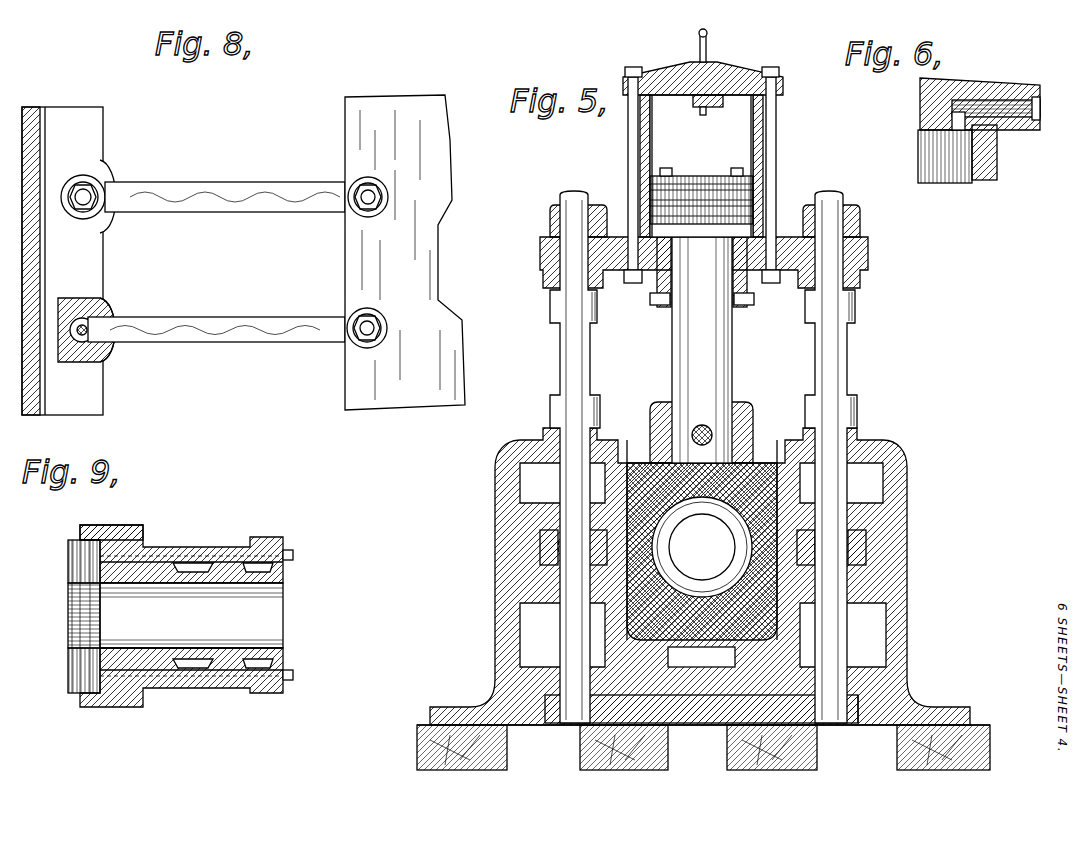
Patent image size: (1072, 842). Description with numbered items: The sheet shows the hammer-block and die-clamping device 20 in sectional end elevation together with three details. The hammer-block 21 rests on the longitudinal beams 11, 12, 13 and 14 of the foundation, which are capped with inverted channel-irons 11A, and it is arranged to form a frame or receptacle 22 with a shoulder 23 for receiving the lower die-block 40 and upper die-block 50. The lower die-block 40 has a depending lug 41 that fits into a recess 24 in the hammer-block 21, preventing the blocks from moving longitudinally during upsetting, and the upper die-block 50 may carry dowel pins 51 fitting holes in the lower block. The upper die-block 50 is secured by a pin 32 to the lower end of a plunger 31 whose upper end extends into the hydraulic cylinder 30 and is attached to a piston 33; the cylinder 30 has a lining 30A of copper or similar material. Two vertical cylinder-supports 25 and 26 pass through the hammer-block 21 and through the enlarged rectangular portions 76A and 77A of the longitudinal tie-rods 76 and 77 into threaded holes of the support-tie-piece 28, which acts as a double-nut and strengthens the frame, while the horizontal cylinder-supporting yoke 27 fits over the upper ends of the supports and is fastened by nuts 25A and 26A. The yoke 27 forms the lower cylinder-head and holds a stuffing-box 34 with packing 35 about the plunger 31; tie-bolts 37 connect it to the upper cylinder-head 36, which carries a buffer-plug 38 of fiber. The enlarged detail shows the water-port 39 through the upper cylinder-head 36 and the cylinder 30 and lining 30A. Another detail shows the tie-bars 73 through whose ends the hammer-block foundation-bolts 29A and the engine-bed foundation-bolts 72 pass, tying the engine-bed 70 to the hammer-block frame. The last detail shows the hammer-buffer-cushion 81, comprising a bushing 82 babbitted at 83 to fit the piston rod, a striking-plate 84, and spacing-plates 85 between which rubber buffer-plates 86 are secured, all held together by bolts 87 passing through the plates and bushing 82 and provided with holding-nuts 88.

In FIG. 5, the longitudinal beam 11 is at (420, 760).
In FIG. 5, the inverted channel-iron cap 11A is at (425, 724).
In FIG. 5, the longitudinal beam 12 is at (578, 760).
In FIG. 5, the longitudinal beam 13 is at (735, 765).
In FIG. 5, the longitudinal beam 14 is at (900, 762).
In FIG. 5, the hammer-block and die-clamping device 20 is at (905, 372).
In FIG. 8, the hammer-block 21 is at (88, 137).
In FIG. 5, the hammer-block 21 is at (903, 593).
In FIG. 5, the frame or receptacle 22 is at (630, 458).
In FIG. 5, the shoulder 23 is at (779, 458).
In FIG. 5, the recess 24 is at (680, 658).
In FIG. 5, the vertical cylinder-support 25 is at (560, 366).
In FIG. 5, the nut 25A is at (553, 217).
In FIG. 5, the vertical cylinder-support 26 is at (848, 352).
In FIG. 5, the nut 26A is at (860, 220).
In FIG. 5, the cylinder-supporting yoke 27 is at (868, 258).
In FIG. 5, the support-tie-piece 28 is at (822, 722).
In FIG. 8, the foundation-bolt 29A is at (100, 185).
In FIG. 5, the hydraulic cylinder 30 is at (752, 130).
In FIG. 6, the hydraulic cylinder 30 is at (985, 157).
In FIG. 5, the lining 30A is at (764, 138).
In FIG. 6, the lining 30A is at (962, 165).
In FIG. 5, the plunger 31 is at (676, 355).
In FIG. 5, the pin 32 is at (697, 428).
In FIG. 5, the piston 33 is at (760, 178).
In FIG. 5, the stuffing-box 34 is at (742, 306).
In FIG. 5, the packing 35 is at (660, 268).
In FIG. 5, the upper cylinder-head 36 is at (722, 75).
In FIG. 6, the upper cylinder-head 36 is at (978, 87).
In FIG. 5, the tie-bolt 37 is at (629, 163).
In FIG. 5, the buffer-plug 38 is at (712, 108).
In FIG. 6, the water-port 39 is at (1038, 100).
In FIG. 5, the lower die-block 40 is at (765, 590).
In FIG. 5, the depending lug 41 is at (703, 668).
In FIG. 5, the upper die-block 50 is at (748, 405).
In FIG. 5, the dowel pin 51 is at (780, 562).
In FIG. 8, the engine-bed 70 is at (348, 142).
In FIG. 8, the foundation-bolt 72 is at (368, 190).
In FIG. 8, the tie-bar 73 is at (222, 193).
In FIG. 5, the longitudinal tie-rod 76 is at (545, 548).
In FIG. 5, the enlarged rectangular portion 76A is at (565, 553).
In FIG. 5, the longitudinal tie-rod 77 is at (862, 545).
In FIG. 5, the enlarged rectangular portion 77A is at (843, 552).
In FIG. 9, the hammer-buffer-cushion 81 is at (181, 581).
In FIG. 9, the bushing 82 is at (135, 698).
In FIG. 9, the babbitt 83 is at (250, 652).
In FIG. 9, the striking-plate 84 is at (68, 573).
In FIG. 9, the spacing-plate 85 is at (91, 532).
In FIG. 9, the buffer-plate 86 is at (80, 690).
In FIG. 9, the bolt 87 is at (212, 553).
In FIG. 9, the holding-nut 88 is at (292, 553).